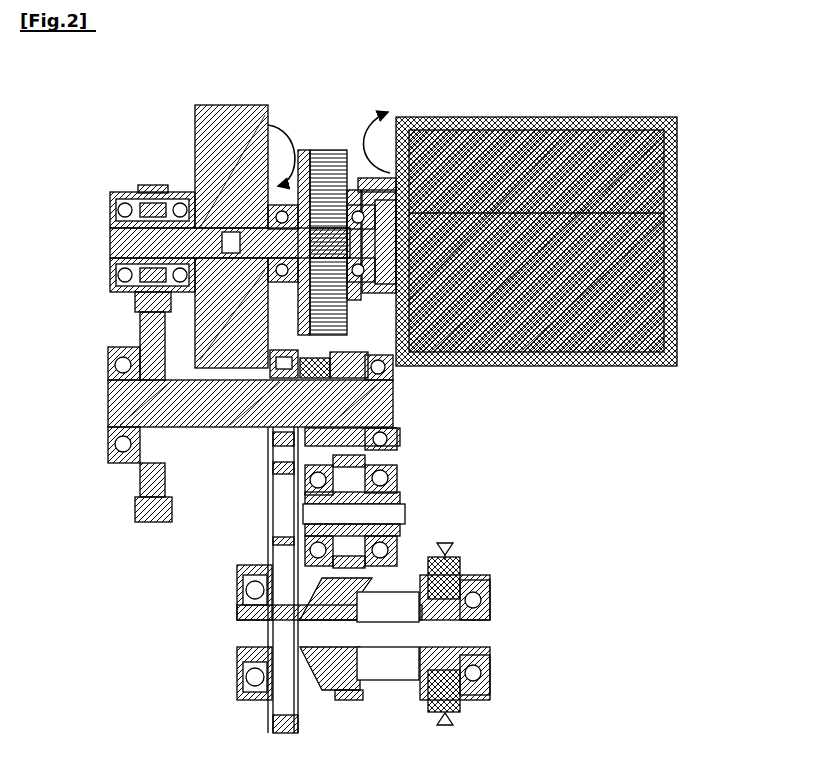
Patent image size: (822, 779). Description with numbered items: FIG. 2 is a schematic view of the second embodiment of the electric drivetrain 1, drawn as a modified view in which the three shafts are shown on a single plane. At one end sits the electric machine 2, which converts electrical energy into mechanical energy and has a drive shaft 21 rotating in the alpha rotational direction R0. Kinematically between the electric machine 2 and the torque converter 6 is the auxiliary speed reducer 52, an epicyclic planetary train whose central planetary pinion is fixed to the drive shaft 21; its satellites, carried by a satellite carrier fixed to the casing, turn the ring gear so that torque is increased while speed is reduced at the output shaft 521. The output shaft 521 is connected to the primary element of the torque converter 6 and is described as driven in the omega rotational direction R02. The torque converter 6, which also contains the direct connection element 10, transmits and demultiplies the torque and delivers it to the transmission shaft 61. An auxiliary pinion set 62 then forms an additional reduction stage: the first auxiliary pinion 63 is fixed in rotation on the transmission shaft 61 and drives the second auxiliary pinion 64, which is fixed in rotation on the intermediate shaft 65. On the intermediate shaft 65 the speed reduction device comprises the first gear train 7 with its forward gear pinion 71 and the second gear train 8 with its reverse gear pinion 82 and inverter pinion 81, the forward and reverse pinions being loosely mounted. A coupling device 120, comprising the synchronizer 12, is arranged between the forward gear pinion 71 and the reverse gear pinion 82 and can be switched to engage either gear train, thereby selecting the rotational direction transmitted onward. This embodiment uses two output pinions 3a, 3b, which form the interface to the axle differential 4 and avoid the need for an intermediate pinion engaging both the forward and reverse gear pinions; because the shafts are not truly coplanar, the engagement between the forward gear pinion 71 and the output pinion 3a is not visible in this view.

The electric drivetrain 1 is at (576, 241).
The electric machine 2 is at (668, 318).
The torque converter 6 is at (227, 216).
The direct connection element 10 is at (210, 105).
The transmission shaft 61 is at (110, 257).
The first auxiliary pinion 63 is at (152, 190).
The auxiliary pinion set 62 is at (104, 332).
The intermediate shaft 65 is at (108, 402).
The second auxiliary pinion 64 is at (140, 466).
The auxiliary speed reducer 52 is at (330, 146).
The output shaft 521 is at (307, 145).
The drive shaft 21 is at (334, 154).
The alpha rotational direction R0 is at (290, 125).
The omega rotational direction R02 is at (392, 108).
The second gear train 8 is at (412, 399).
The reverse gear pinion 82 is at (392, 370).
The first gear train 7 is at (268, 448).
The forward gear pinion 71 is at (275, 442).
The coupling device 120 is at (405, 466).
The synchronizer 12 is at (402, 478).
The inverter pinion 81 is at (408, 513).
The axle differential 4 is at (485, 655).
The output pinion 3a is at (272, 732).
The output pinion 3b is at (350, 702).